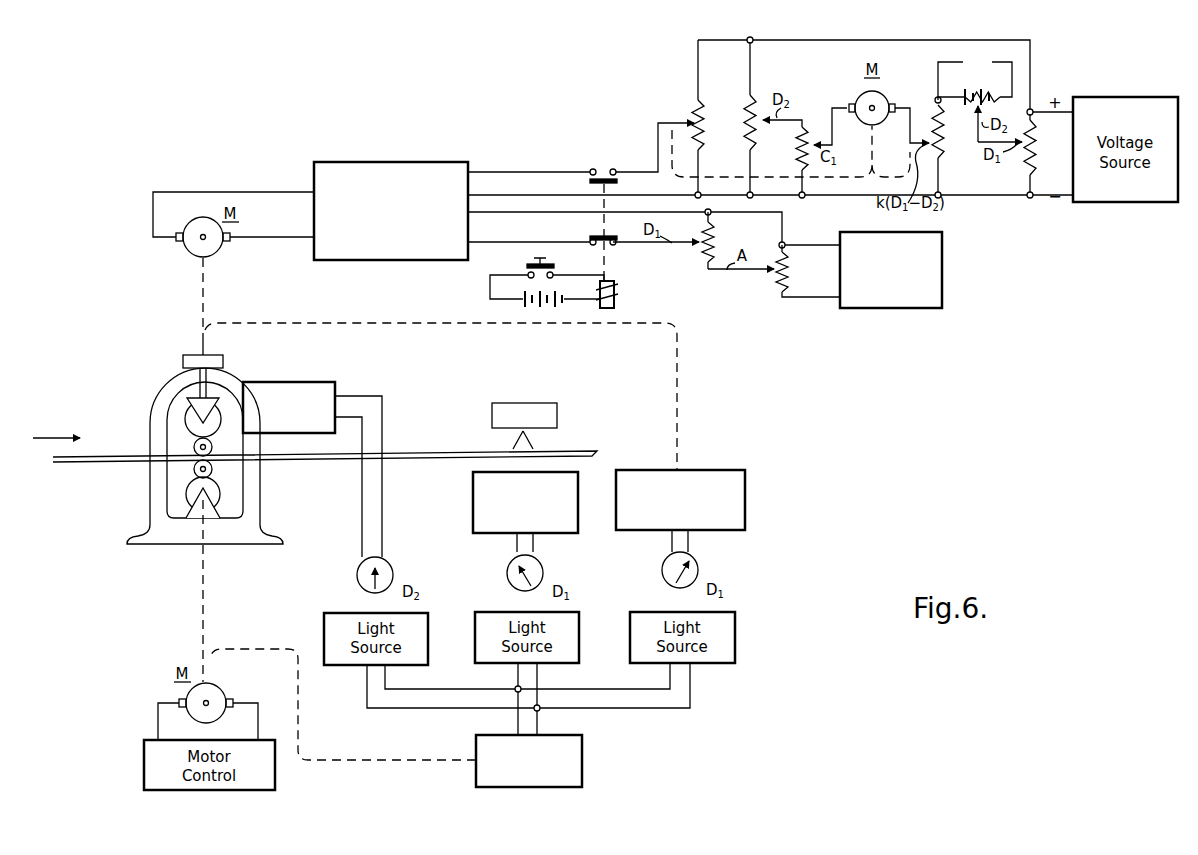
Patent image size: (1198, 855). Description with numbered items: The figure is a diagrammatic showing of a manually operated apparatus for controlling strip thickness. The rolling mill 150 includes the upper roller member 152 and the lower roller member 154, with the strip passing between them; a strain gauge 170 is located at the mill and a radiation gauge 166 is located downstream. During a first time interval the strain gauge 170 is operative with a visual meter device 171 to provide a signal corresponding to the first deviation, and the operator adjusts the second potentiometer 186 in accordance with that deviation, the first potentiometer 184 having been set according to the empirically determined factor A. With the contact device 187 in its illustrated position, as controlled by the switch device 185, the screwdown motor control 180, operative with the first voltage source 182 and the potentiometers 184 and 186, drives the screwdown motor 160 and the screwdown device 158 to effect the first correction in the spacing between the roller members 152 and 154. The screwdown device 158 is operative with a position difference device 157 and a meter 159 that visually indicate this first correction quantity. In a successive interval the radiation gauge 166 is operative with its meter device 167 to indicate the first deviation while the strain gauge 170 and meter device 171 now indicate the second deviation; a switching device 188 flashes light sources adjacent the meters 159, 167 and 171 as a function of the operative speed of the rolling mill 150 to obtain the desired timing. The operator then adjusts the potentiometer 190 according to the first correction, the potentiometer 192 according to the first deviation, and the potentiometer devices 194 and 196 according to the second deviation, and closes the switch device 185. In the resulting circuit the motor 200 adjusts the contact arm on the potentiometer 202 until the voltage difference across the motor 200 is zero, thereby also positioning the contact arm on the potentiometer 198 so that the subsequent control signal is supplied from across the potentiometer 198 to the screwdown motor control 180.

The rolling mill 150 is at (137, 399).
The upper roller member 152 is at (194, 447).
The lower roller member 154 is at (194, 470).
The position difference device 157 is at (745, 484).
The screwdown device 158 is at (183, 362).
The meter 159 is at (694, 566).
The screwdown motor 160 is at (220, 250).
The radiation gauge 166 is at (473, 486).
The meter device 167 is at (541, 569).
The strain gauge 170 is at (291, 382).
The meter device 171 is at (390, 569).
The screwdown motor control 180 is at (413, 163).
The first voltage source 182 is at (943, 279).
The first potentiometer 184 is at (778, 288).
The switch device 185 is at (537, 268).
The second potentiometer 186 is at (714, 242).
The contact device 187 is at (616, 295).
The switching device 188 is at (583, 761).
The potentiometer 190 is at (799, 158).
The potentiometer 192 is at (1033, 160).
The potentiometer device 194 is at (945, 82).
The potentiometer device 196 is at (758, 128).
The potentiometer 198 is at (702, 112).
The motor 200 is at (858, 96).
The potentiometer 202 is at (941, 158).